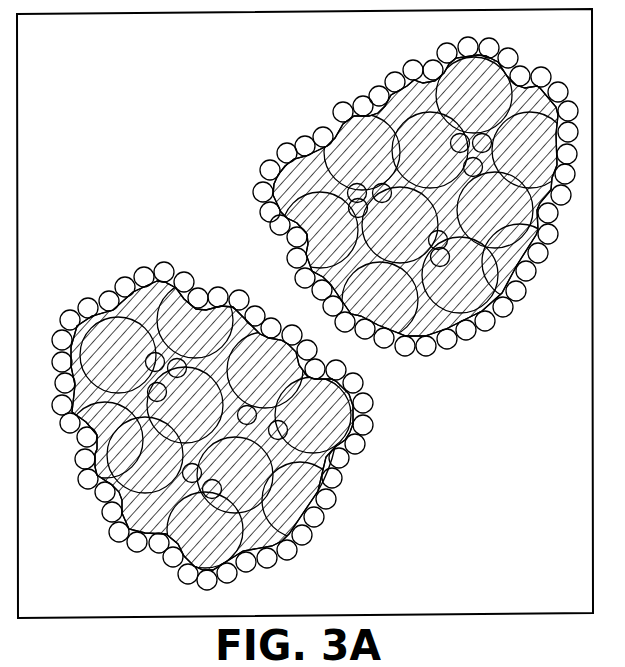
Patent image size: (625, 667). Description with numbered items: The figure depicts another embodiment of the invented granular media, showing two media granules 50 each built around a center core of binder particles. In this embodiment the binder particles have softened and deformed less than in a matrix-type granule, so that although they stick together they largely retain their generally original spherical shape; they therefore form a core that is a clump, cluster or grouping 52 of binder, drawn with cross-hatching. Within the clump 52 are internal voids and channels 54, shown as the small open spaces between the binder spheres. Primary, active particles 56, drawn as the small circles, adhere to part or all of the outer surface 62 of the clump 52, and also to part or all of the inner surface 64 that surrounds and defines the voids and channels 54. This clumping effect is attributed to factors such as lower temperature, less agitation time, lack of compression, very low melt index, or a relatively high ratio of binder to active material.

The media granules 50 is at (304, 317).
The clump of binder 52 is at (383, 80).
The internal voids and channels 54 is at (458, 132).
The primary active particles 56 is at (487, 45).
The outer surface 62 is at (117, 300).
The inner surface 64 is at (335, 465).